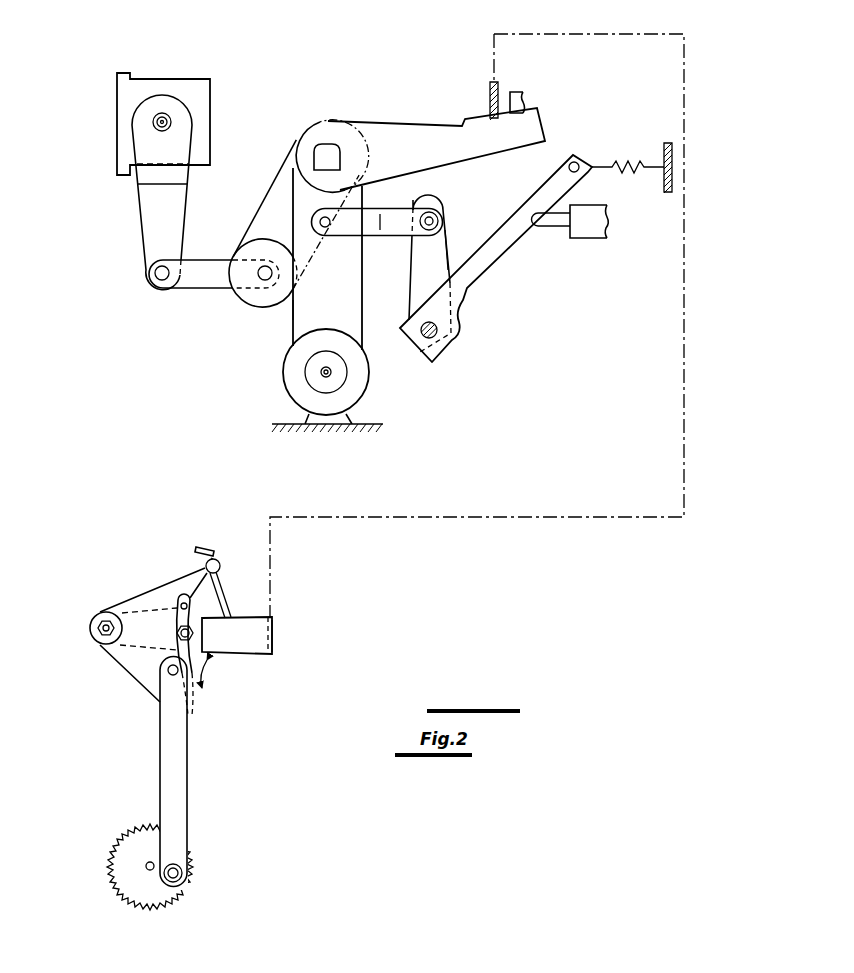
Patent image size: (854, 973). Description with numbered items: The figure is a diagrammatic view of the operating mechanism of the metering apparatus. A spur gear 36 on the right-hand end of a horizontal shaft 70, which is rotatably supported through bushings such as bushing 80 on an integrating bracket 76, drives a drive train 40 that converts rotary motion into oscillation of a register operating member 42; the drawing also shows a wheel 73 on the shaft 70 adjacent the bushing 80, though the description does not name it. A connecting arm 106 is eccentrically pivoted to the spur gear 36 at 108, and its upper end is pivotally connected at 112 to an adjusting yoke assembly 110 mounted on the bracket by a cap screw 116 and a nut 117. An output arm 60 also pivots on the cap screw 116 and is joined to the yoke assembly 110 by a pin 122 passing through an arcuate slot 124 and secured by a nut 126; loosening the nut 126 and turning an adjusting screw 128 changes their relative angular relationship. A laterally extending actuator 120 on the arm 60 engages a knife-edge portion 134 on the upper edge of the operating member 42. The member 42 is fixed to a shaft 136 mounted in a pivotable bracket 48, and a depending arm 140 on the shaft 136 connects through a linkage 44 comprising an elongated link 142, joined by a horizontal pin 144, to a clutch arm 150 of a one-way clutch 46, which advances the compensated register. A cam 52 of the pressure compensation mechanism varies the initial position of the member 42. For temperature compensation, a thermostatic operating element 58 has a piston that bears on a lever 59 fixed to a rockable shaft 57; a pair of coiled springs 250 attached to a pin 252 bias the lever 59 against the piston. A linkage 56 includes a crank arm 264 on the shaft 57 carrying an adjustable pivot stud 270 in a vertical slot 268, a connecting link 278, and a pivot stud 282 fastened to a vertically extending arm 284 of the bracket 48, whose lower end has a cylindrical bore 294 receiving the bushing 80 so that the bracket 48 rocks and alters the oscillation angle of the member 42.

The spur gear 36 is at (124, 840).
The drive train 40 is at (160, 706).
The register operating member 42 is at (488, 147).
The linkage 44 is at (175, 296).
The one-way clutch 46 is at (118, 136).
The pivotable bracket 48 is at (290, 312).
The cam 52 is at (527, 98).
The linkage 56 is at (408, 268).
The rockable shaft 57 is at (437, 336).
The thermostatic operating element 58 is at (588, 236).
The lever 59 is at (520, 236).
The arm 60 is at (242, 618).
The shaft 70 is at (332, 377).
The wheel 73 is at (283, 373).
The integrating bracket 76 is at (322, 426).
The bushing 80 is at (346, 372).
The connecting arm 106 is at (189, 758).
The eccentric pivot 108 is at (190, 874).
The adjusting yoke assembly 110 is at (115, 598).
The pivotal connection 112 is at (160, 668).
The cap screw 116 is at (98, 628).
The nut 117 is at (102, 614).
The actuator 120 is at (274, 634).
The pin 122 is at (200, 630).
The arcuate slot 124 is at (180, 606).
The nut 126 is at (177, 633).
The adjusting screw 128 is at (204, 547).
The knife-edge portion 134 is at (476, 120).
The shaft 136 is at (334, 146).
The depending arm 140 is at (272, 210).
The elongated link 142 is at (200, 280).
The horizontal pin 144 is at (268, 268).
The clutch arm 150 is at (152, 232).
The coiled springs 250 is at (626, 162).
The pin 252 is at (578, 162).
The crank arm 264 is at (448, 262).
The vertical slot 268 is at (438, 212).
The pivot stud 270 is at (412, 218).
The connecting link 278 is at (385, 226).
The pivot stud 282 is at (327, 228).
The bracket arm 284 is at (314, 310).
The cylindrical bore 294 is at (336, 358).